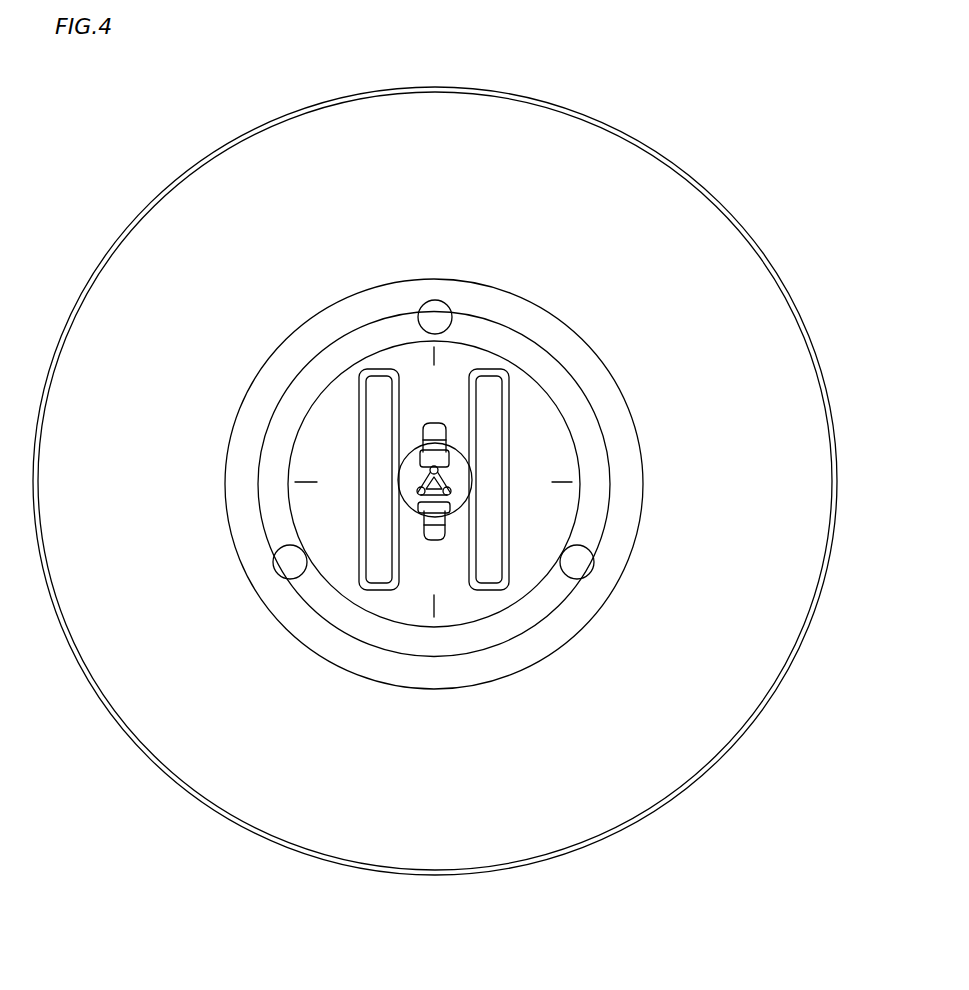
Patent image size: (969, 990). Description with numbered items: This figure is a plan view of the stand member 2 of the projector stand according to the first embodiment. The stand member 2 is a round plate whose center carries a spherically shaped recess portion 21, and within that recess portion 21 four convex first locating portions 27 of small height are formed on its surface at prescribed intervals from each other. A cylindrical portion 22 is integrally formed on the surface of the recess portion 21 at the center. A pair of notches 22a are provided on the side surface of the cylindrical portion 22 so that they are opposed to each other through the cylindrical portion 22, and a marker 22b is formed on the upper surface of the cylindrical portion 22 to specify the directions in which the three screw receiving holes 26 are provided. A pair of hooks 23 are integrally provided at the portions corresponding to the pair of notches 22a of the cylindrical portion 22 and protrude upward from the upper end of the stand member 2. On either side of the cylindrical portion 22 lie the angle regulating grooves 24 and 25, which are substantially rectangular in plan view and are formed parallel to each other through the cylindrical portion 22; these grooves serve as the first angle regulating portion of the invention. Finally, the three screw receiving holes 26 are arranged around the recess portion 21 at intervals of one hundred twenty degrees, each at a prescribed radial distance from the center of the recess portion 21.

The stand member 2 is at (227, 730).
The recess portion 21 is at (525, 393).
The cylindrical portion 22 is at (405, 487).
The notches 22a is at (417, 462).
The marker 22b is at (447, 492).
The hooks 23 is at (432, 445).
The angle regulating groove 24 is at (497, 528).
The angle regulating groove 25 is at (373, 564).
The screw receiving holes 26 is at (450, 300).
The first locating portions 27 is at (434, 347).